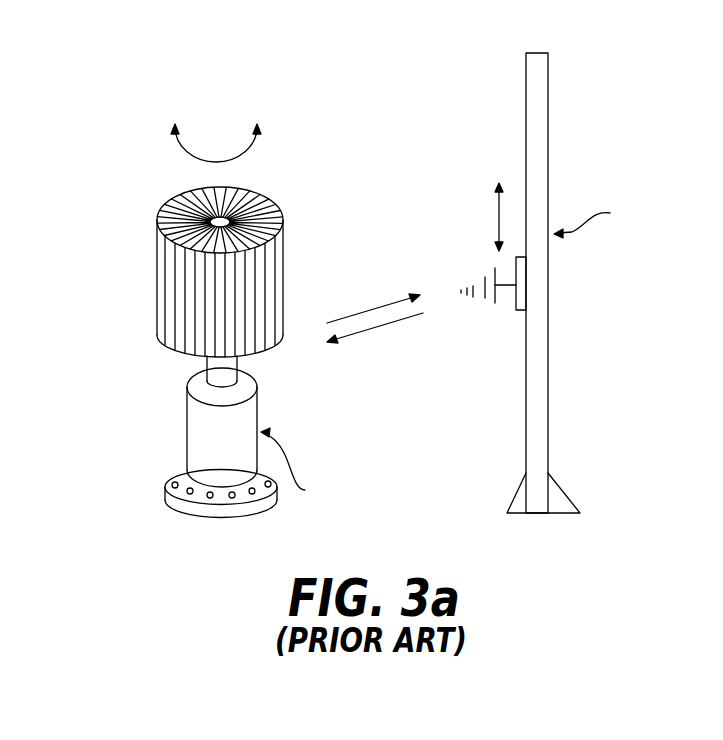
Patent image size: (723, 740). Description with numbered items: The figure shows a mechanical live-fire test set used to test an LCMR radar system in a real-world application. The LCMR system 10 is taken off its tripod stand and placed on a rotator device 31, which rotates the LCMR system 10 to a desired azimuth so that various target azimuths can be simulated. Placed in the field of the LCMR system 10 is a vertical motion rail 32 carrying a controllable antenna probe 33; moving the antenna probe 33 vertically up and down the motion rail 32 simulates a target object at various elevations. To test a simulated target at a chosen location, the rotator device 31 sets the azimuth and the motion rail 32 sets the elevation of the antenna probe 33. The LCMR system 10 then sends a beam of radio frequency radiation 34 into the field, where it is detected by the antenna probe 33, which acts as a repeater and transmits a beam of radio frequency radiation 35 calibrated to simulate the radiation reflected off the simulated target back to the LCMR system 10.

The LCMR system 10 is at (160, 157).
The rotator device 31 is at (188, 425).
The vertical motion rail 32 is at (551, 190).
The antenna probe 33 is at (482, 281).
The beam of radio frequency radiation 34 is at (349, 316).
The beam of radio frequency radiation 35 is at (350, 336).